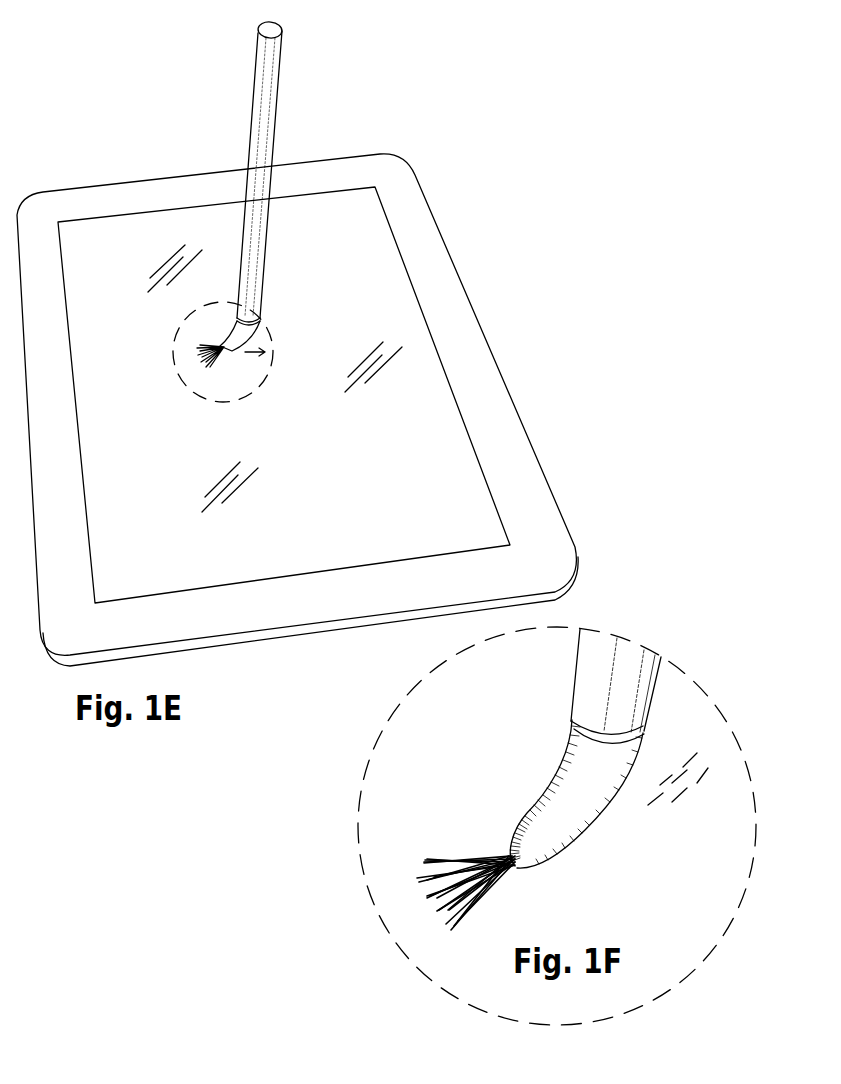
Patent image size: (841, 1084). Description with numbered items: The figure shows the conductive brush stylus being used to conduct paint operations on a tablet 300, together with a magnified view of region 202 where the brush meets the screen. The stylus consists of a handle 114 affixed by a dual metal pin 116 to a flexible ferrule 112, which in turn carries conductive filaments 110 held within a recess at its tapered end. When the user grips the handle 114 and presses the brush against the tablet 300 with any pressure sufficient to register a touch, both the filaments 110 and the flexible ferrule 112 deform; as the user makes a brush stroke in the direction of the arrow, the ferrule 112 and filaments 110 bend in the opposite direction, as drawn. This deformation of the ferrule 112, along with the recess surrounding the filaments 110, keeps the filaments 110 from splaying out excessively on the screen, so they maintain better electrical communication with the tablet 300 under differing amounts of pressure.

In FIG. 1F, the conductive filaments 110 is at (478, 850).
In FIG. 1F, the flexible ferrule 112 is at (568, 777).
In FIG. 1E, the handle 114 is at (270, 100).
In FIG. 1F, the handle 114 is at (592, 672).
In FIG. 1F, the dual metal pin 116 is at (577, 717).
In FIG. 1E, the region 202 is at (269, 328).
In FIG. 1F, the region 202 is at (704, 682).
In FIG. 1E, the tablet 300 is at (500, 427).